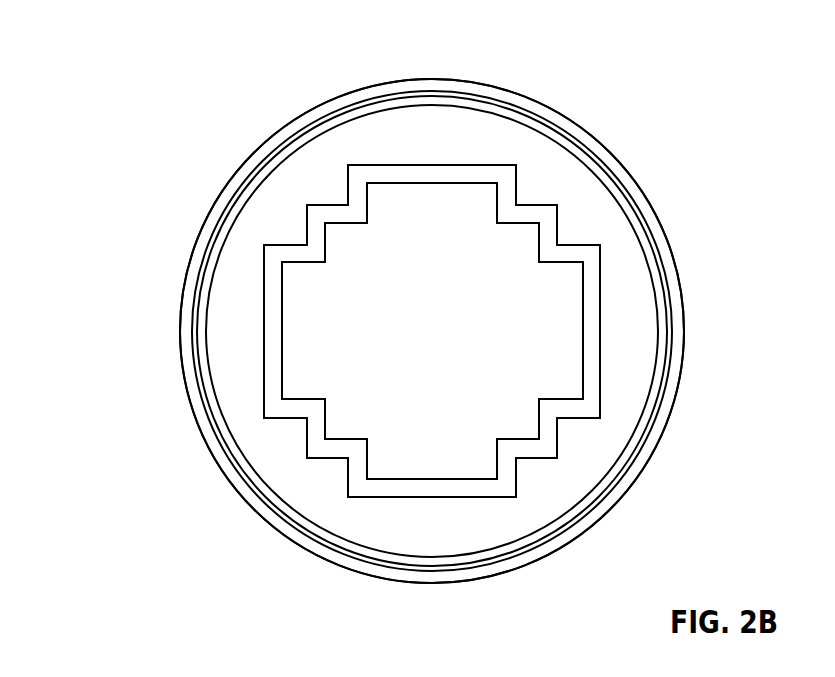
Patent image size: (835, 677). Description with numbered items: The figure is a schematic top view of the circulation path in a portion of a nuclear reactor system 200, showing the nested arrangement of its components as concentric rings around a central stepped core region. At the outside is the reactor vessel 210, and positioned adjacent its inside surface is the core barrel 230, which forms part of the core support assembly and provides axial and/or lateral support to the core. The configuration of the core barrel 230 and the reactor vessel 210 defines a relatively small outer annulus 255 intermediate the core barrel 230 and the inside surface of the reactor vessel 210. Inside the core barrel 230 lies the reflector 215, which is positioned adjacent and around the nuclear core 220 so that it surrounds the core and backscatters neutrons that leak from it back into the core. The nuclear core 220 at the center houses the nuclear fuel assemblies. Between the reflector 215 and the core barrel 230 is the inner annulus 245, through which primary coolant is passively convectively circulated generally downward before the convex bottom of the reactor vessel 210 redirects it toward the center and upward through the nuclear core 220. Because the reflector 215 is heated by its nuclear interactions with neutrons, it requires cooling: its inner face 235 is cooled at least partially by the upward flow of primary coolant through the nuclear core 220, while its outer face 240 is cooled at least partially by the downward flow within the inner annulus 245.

The nuclear reactor system 200 is at (120, 83).
The reactor vessel 210 is at (271, 119).
The reflector 215 is at (501, 136).
The nuclear core 220 is at (413, 467).
The core barrel 230 is at (327, 128).
The inner face 235 is at (510, 441).
The outer face 240 is at (518, 176).
The inner annulus 245 is at (287, 196).
The outer annulus 255 is at (188, 352).